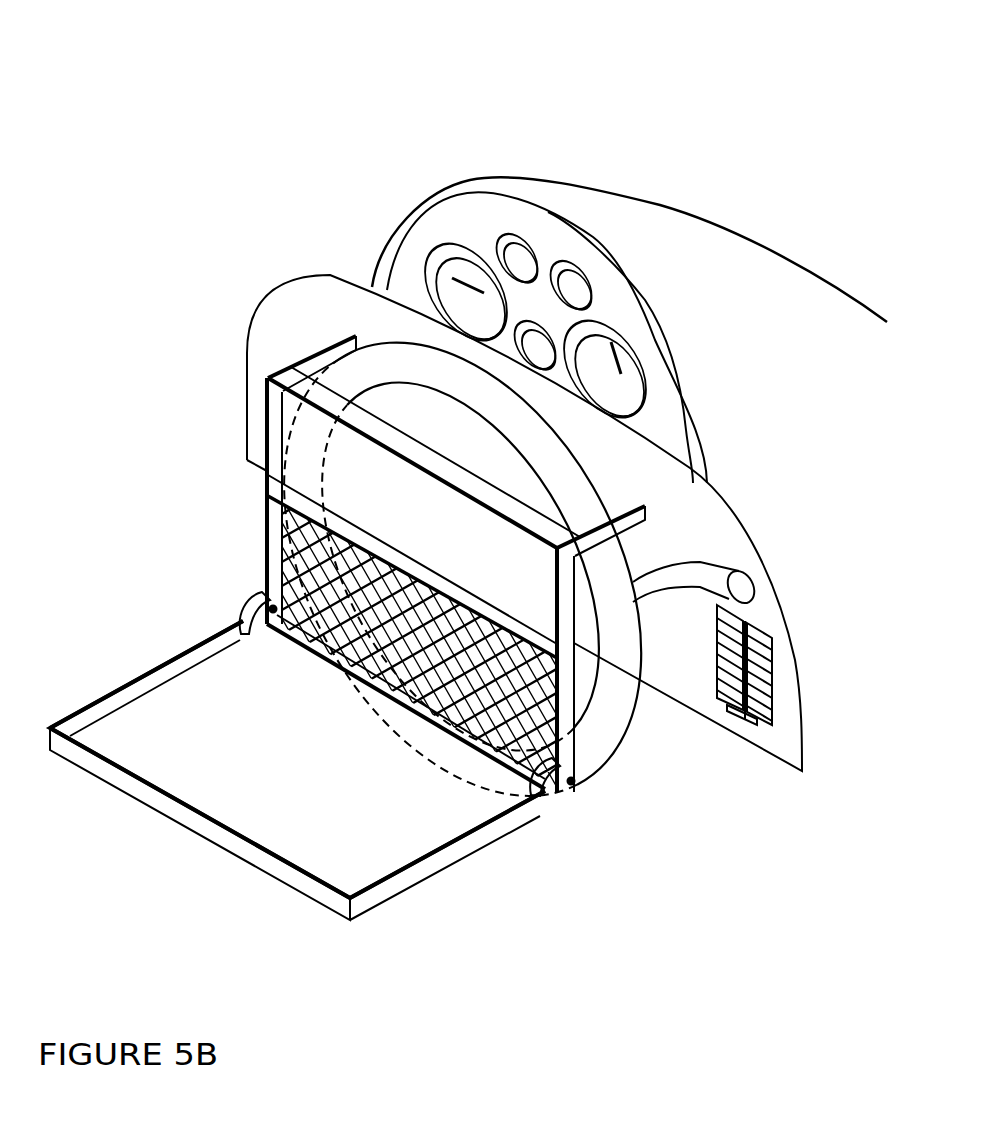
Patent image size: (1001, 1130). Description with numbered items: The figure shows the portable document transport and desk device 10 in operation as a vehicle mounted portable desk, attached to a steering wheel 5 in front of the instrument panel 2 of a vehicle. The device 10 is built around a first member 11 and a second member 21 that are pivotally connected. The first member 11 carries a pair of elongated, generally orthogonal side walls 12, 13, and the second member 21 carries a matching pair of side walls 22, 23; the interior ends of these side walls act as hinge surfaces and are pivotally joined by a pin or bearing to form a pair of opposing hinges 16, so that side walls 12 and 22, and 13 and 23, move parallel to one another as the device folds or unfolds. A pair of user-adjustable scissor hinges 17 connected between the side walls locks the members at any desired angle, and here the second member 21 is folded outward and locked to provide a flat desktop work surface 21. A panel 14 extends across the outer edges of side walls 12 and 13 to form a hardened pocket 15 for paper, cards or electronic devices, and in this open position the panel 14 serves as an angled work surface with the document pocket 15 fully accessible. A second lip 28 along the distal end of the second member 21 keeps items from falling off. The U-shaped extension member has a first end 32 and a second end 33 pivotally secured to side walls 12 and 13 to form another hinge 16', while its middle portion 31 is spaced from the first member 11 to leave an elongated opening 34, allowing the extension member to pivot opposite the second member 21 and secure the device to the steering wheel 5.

The portable document transport and desk device 10 is at (172, 160).
The instrument panel / dash 2 is at (655, 225).
The steering wheel 5 is at (417, 368).
The first end 32 is at (310, 368).
The elongated opening 34 is at (455, 444).
The middle portion 31 is at (610, 480).
The second end 33 is at (632, 513).
The first member 11 is at (403, 511).
The side wall 12 is at (270, 497).
The side wall 13 is at (570, 667).
The pocket 15 is at (423, 578).
The panel 14 is at (427, 644).
The scissor hinges 17 is at (250, 597).
The hinges 16 is at (469, 724).
The hinge 16' is at (696, 612).
The second member 21 is at (303, 772).
The side wall 22 is at (145, 670).
The second lip 28 is at (202, 825).
The side wall 23 is at (425, 862).